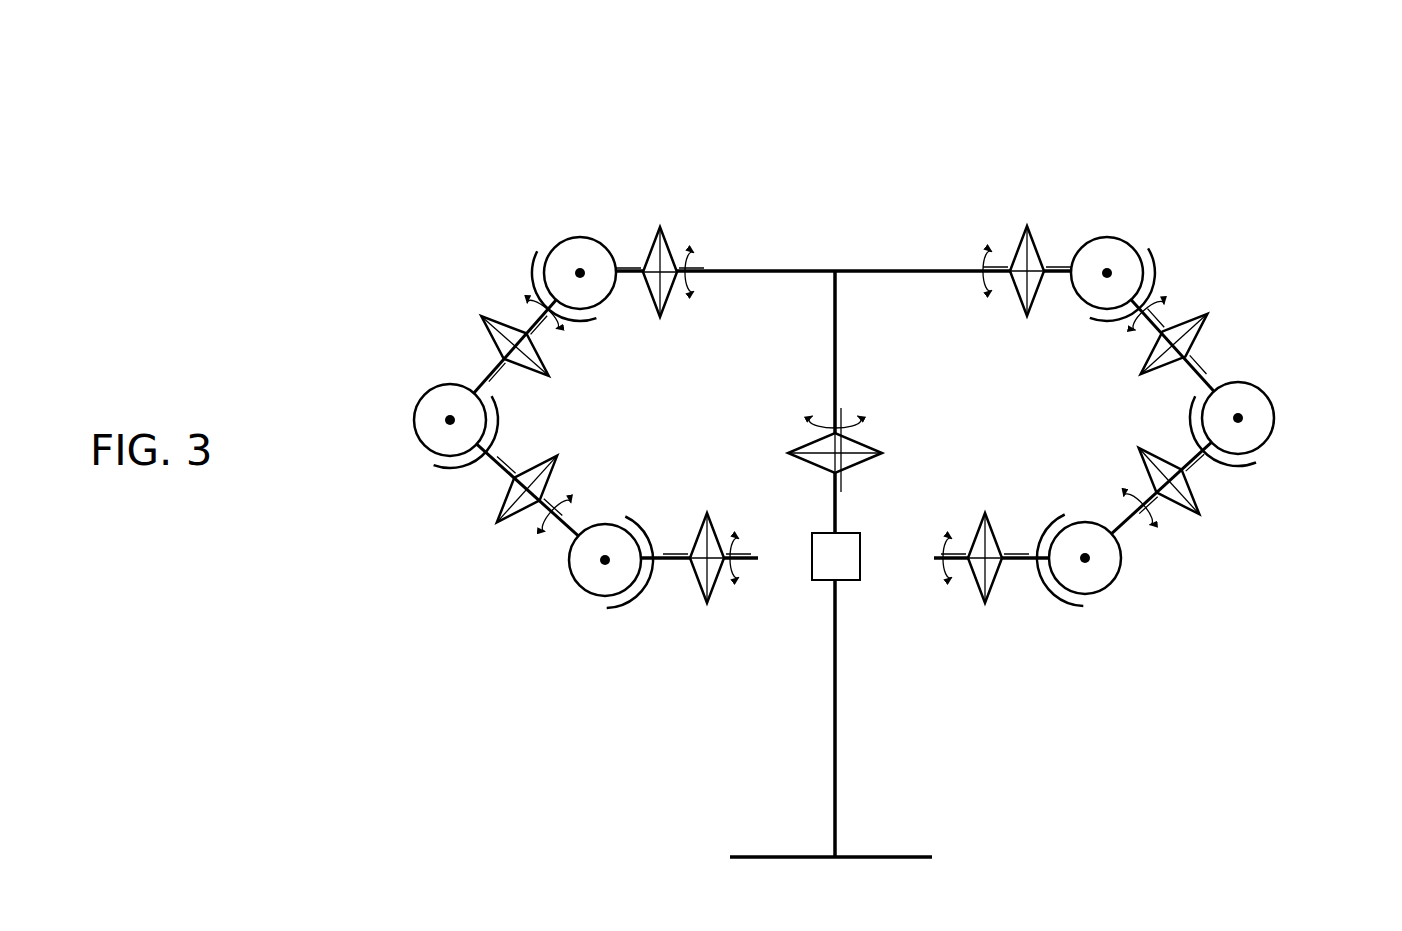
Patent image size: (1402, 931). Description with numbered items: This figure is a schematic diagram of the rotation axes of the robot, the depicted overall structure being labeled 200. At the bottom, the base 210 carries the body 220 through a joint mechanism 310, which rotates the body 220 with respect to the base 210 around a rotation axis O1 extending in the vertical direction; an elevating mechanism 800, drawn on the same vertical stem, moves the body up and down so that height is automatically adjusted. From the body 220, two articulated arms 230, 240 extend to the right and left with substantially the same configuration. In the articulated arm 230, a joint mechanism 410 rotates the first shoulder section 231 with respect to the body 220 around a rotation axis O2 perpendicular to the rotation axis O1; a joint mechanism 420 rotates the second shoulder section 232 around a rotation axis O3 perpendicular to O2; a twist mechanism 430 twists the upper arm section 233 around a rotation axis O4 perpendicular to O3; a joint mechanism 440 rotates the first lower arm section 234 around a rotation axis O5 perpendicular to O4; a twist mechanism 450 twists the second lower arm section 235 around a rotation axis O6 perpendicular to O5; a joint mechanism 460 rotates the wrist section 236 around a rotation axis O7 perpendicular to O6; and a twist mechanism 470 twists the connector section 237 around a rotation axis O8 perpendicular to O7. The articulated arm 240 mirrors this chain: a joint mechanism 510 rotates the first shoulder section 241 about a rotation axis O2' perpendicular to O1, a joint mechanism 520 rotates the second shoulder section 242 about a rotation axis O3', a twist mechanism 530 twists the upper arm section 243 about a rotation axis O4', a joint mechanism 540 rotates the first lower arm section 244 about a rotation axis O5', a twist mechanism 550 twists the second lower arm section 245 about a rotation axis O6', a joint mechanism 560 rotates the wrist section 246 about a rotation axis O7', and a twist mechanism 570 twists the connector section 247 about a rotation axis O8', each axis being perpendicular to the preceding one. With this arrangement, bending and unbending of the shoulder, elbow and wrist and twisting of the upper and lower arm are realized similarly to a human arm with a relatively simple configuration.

The robot 200 is at (849, 449).
The base 210 is at (835, 735).
The body 220 is at (884, 267).
The articulated arm 230 is at (1144, 416).
The first shoulder section 231 is at (1060, 265).
The second shoulder section 232 is at (1158, 268).
The upper arm section 233 is at (1214, 380).
The first lower arm section 234 is at (1236, 468).
The second lower arm section 235 is at (1130, 522).
The wrist section 236 is at (1053, 598).
The connector section 237 is at (942, 568).
The articulated arm 240 is at (552, 418).
The first shoulder section 241 is at (630, 265).
The second shoulder section 242 is at (532, 265).
The upper arm section 243 is at (482, 372).
The first lower arm section 244 is at (453, 467).
The second lower arm section 245 is at (562, 528).
The wrist section 246 is at (640, 598).
The connector section 247 is at (745, 568).
The joint mechanism 310 is at (886, 452).
The joint mechanism 410 is at (1027, 224).
The joint mechanism 420 is at (1123, 234).
The twist mechanism 430 is at (1143, 376).
The joint mechanism 440 is at (1281, 421).
The twist mechanism 450 is at (1128, 446).
The joint mechanism 460 is at (1112, 588).
The twist mechanism 470 is at (985, 608).
The joint mechanism 510 is at (660, 224).
The joint mechanism 520 is at (562, 235).
The twist mechanism 530 is at (556, 379).
The joint mechanism 540 is at (412, 421).
The twist mechanism 550 is at (564, 446).
The joint mechanism 560 is at (577, 588).
The twist mechanism 570 is at (707, 608).
The elevating mechanism 800 is at (852, 583).
The rotation axis O1 is at (848, 482).
The rotation axis O2 is at (969, 228).
The rotation axis O3 is at (1077, 312).
The rotation axis O4 is at (1203, 303).
The rotation axis O5 is at (1288, 389).
The rotation axis O6 is at (1187, 526).
The rotation axis O7 is at (1095, 618).
The rotation axis O8 is at (987, 519).
The rotation axis O2' is at (716, 230).
The rotation axis O3' is at (611, 314).
The rotation axis O4' is at (487, 302).
The rotation axis O5' is at (399, 391).
The rotation axis O6' is at (507, 526).
The rotation axis O7' is at (593, 619).
The rotation axis O8' is at (697, 520).